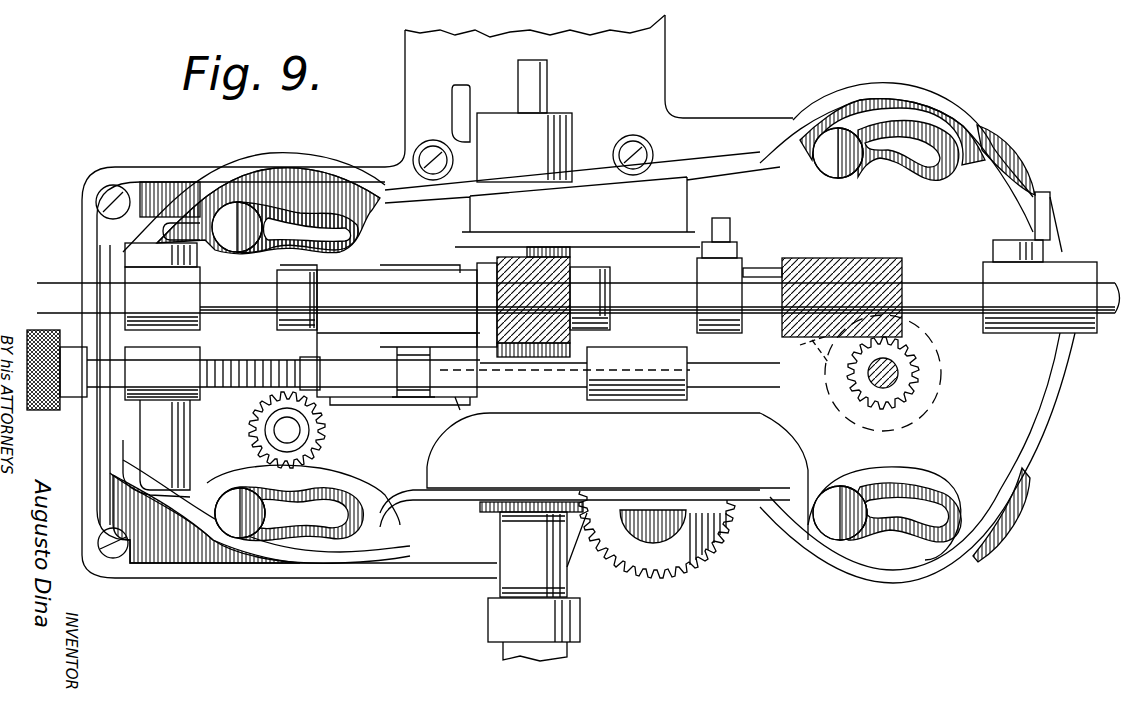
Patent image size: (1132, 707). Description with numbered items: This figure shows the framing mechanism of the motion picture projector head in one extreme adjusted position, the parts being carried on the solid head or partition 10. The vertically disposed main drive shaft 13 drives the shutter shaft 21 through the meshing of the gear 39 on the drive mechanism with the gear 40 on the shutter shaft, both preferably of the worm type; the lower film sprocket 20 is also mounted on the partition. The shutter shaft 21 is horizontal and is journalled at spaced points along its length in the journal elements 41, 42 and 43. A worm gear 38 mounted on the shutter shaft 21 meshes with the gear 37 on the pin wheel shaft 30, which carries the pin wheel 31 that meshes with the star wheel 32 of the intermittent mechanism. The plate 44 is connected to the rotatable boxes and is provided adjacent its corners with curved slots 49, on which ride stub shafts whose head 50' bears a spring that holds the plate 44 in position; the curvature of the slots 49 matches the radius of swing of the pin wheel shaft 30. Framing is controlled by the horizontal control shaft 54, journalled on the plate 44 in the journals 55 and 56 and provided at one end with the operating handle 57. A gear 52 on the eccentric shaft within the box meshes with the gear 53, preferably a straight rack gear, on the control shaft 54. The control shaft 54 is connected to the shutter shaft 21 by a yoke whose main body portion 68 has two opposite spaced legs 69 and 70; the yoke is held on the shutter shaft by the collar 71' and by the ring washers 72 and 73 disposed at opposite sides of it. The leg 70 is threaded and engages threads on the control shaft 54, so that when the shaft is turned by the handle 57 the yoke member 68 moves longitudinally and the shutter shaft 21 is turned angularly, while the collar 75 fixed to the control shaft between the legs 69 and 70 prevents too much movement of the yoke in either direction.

The partition 10 is at (648, 92).
The main drive shaft 13 is at (548, 80).
The lower film sprocket 20 is at (700, 508).
The shutter shaft 21 is at (258, 300).
The pin wheel shaft 30 is at (900, 375).
The pin wheel 31 is at (840, 408).
The star wheel 32 is at (822, 362).
The gear 37 is at (913, 397).
The worm gear 38 is at (850, 248).
The gear 39 is at (505, 340).
The gear 40 is at (497, 292).
The journal element 41 is at (162, 298).
The journal element 42 is at (739, 275).
The journal element 43 is at (1040, 262).
The plate 44 is at (845, 456).
The curved slots 49 is at (370, 230).
The head 50' is at (533, 334).
The gear 52 is at (255, 440).
The gear 53 is at (240, 392).
The control shaft 54 is at (316, 345).
The journal 55 is at (162, 418).
The journal 56 is at (650, 345).
The operating handle 57 is at (33, 330).
The yoke member 68 is at (397, 331).
The leg 69 is at (368, 398).
The leg 70 is at (462, 403).
The collar 71' is at (296, 255).
The ring washer 72 is at (318, 300).
The ring washer 73 is at (482, 313).
The collar 75 is at (412, 398).